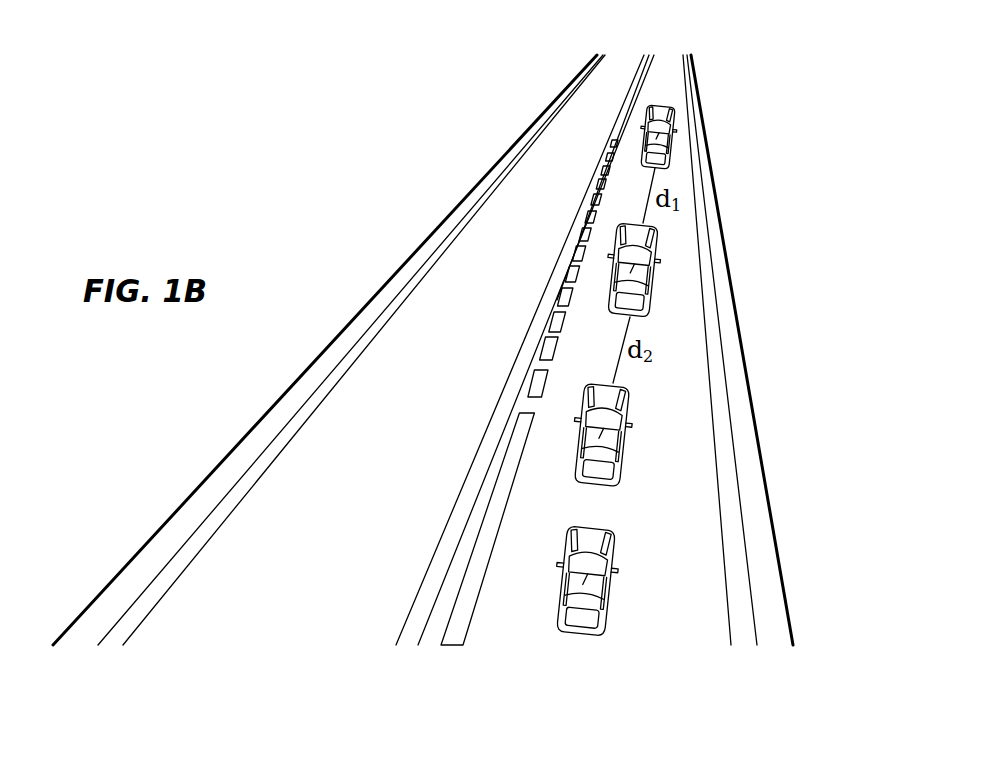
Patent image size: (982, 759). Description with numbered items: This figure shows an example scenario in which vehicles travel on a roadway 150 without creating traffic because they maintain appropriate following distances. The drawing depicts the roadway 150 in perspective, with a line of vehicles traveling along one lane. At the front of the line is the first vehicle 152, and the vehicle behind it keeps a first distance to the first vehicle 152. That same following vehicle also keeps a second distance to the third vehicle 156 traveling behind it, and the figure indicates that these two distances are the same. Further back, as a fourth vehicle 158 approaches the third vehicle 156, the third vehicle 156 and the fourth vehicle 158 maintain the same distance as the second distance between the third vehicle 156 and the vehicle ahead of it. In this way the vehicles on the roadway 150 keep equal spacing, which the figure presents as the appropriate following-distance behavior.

The roadway 150 is at (418, 103).
The first vehicle 152 is at (660, 130).
The third vehicle 156 is at (615, 423).
The fourth vehicle 158 is at (603, 560).